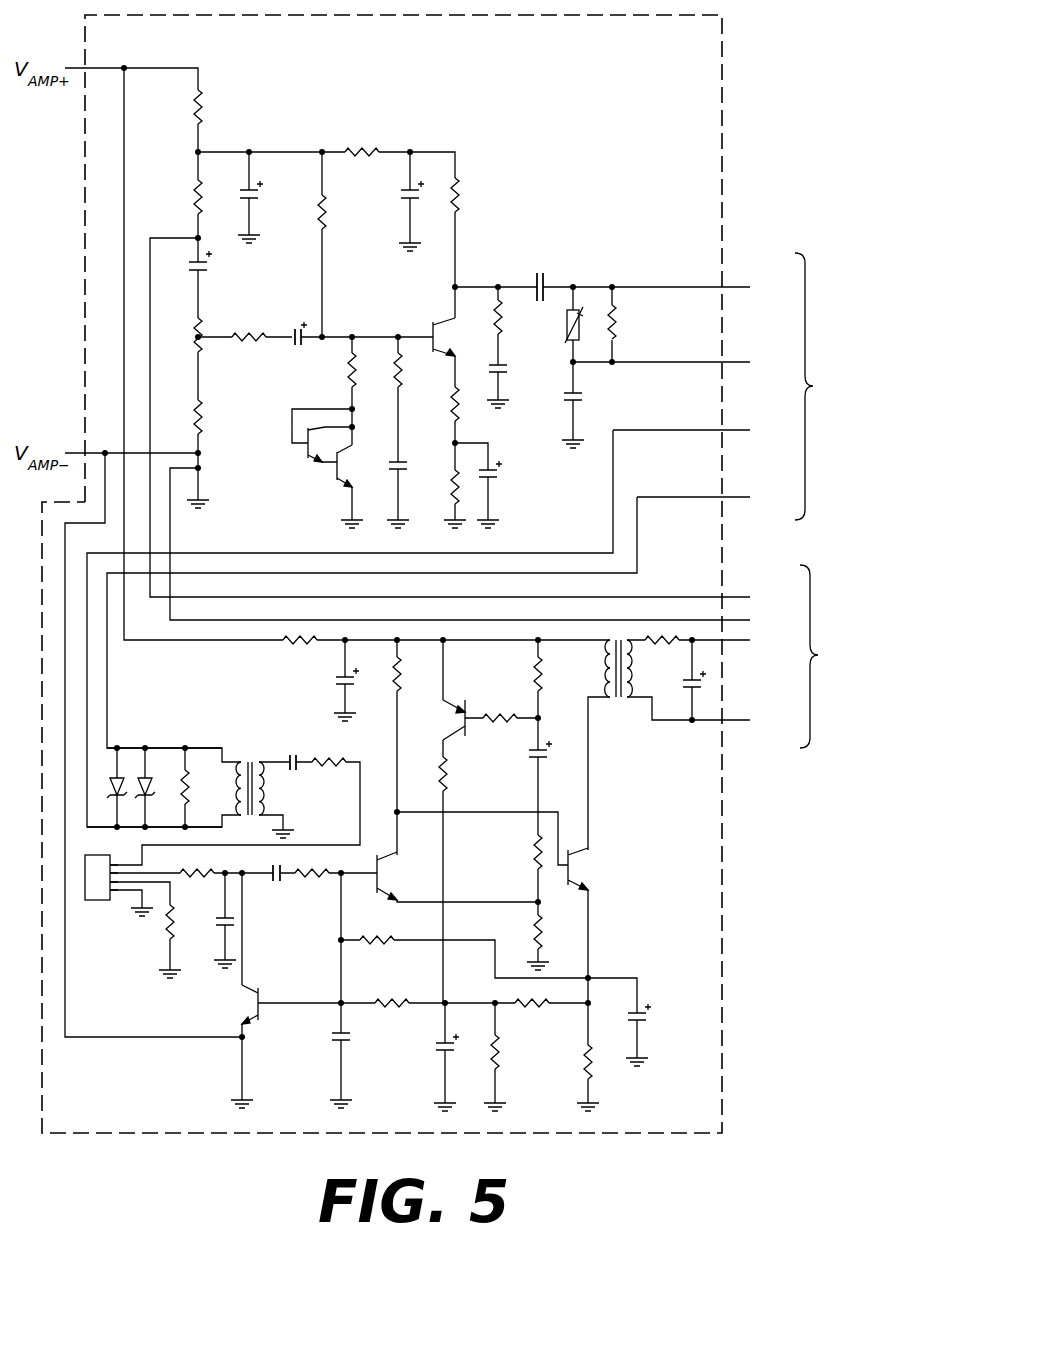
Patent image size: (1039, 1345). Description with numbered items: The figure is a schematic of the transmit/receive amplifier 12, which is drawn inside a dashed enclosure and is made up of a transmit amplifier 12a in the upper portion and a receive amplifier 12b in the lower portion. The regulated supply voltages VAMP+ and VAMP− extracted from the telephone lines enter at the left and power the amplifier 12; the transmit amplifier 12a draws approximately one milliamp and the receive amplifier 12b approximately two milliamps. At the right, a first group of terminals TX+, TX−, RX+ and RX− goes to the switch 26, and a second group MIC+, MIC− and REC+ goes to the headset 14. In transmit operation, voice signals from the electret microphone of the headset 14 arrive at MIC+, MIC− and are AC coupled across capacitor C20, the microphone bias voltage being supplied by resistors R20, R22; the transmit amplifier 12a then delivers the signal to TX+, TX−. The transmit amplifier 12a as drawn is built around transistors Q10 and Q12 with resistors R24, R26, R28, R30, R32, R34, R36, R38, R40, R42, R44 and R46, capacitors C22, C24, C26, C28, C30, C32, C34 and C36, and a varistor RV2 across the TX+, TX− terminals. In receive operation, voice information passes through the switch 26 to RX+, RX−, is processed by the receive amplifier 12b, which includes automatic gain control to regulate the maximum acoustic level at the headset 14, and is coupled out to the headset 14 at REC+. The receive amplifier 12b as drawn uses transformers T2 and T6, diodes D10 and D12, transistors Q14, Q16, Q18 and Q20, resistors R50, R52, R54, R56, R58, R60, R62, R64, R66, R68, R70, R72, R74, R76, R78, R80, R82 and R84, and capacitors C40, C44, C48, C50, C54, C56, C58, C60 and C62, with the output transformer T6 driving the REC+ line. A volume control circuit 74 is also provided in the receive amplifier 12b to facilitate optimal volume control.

The transmit/receive amplifier 12 is at (629, 70).
The transmit amplifier 12a is at (406, 306).
The receive amplifier 12b is at (514, 787).
The headset 14 is at (824, 656).
The switch 26 is at (818, 386).
The volume control circuit 74 is at (97, 902).
The transformer T2 is at (262, 755).
The transformer T6 is at (629, 722).
The resistor R20 is at (206, 109).
The resistor R22 is at (194, 194).
The resistor R24 is at (192, 331).
The resistor R26 is at (202, 418).
The resistor R28 is at (262, 328).
The resistor R30 is at (360, 147).
The resistor R32 is at (325, 216).
The resistor R34 is at (346, 378).
The resistor R36 is at (402, 370).
The resistor R38 is at (450, 408).
The resistor R40 is at (450, 486).
The resistor R42 is at (500, 316).
The resistor R44 is at (626, 332).
The resistor R46 is at (461, 198).
The resistor R50 is at (293, 645).
The resistor R52 is at (410, 680).
The resistor R54 is at (188, 796).
The resistor R56 is at (334, 748).
The resistor R58 is at (216, 866).
The resistor R60 is at (164, 938).
The resistor R62 is at (330, 866).
The resistor R64 is at (396, 932).
The resistor R66 is at (409, 998).
The resistor R68 is at (440, 774).
The resistor R70 is at (516, 712).
The resistor R72 is at (541, 678).
The resistor R74 is at (535, 854).
The resistor R76 is at (534, 924).
The resistor R78 is at (529, 1010).
The resistor R80 is at (498, 1058).
The resistor R82 is at (584, 1058).
The resistor R84 is at (656, 650).
The varistor RV2 is at (566, 336).
The capacitor C20 is at (202, 276).
The capacitor C22 is at (252, 204).
The capacitor C24 is at (238, 342).
The capacitor C26 is at (406, 192).
The capacitor C28 is at (400, 468).
The capacitor C30 is at (498, 480).
The capacitor C32 is at (502, 374).
The capacitor C34 is at (540, 269).
The capacitor C36 is at (577, 402).
The capacitor C40 is at (336, 686).
The capacitor C44 is at (297, 750).
The capacitor C48 is at (218, 926).
The capacitor C50 is at (270, 882).
The capacitor C54 is at (352, 1040).
The capacitor C56 is at (436, 1048).
The capacitor C58 is at (548, 762).
The capacitor C60 is at (642, 1027).
The capacitor C62 is at (684, 686).
The transistor Q10 is at (355, 466).
The transistor Q12 is at (435, 333).
The transistor Q14 is at (253, 1003).
The transistor Q16 is at (384, 873).
The transistor Q18 is at (462, 724).
The transistor Q20 is at (572, 866).
The diode D10 is at (106, 788).
The diode D12 is at (152, 786).